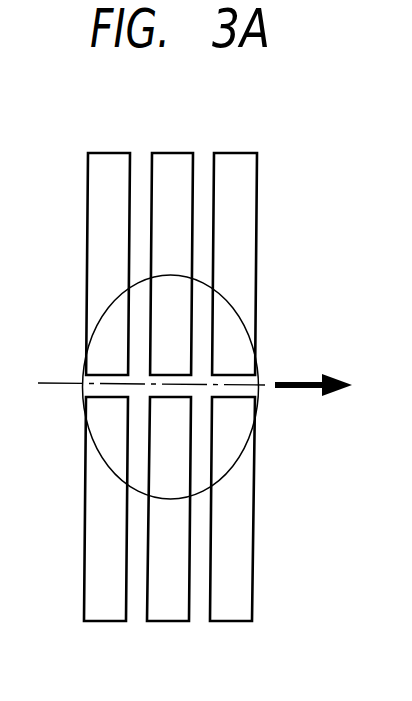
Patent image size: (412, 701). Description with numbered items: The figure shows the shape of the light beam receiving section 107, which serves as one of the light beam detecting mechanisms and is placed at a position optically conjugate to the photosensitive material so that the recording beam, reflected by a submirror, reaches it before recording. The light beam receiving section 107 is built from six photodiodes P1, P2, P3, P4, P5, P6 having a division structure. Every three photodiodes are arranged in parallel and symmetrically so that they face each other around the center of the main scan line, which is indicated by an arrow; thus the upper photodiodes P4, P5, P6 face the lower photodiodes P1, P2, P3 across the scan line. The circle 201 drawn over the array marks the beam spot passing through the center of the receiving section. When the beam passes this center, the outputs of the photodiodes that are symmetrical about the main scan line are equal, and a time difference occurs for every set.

The light beam receiving section 107 is at (278, 199).
The beam spot 201 is at (257, 367).
The photodiode P1 is at (115, 622).
The photodiode P2 is at (175, 622).
The photodiode P3 is at (240, 622).
The photodiode P4 is at (115, 152).
The photodiode P5 is at (180, 152).
The photodiode P6 is at (243, 152).